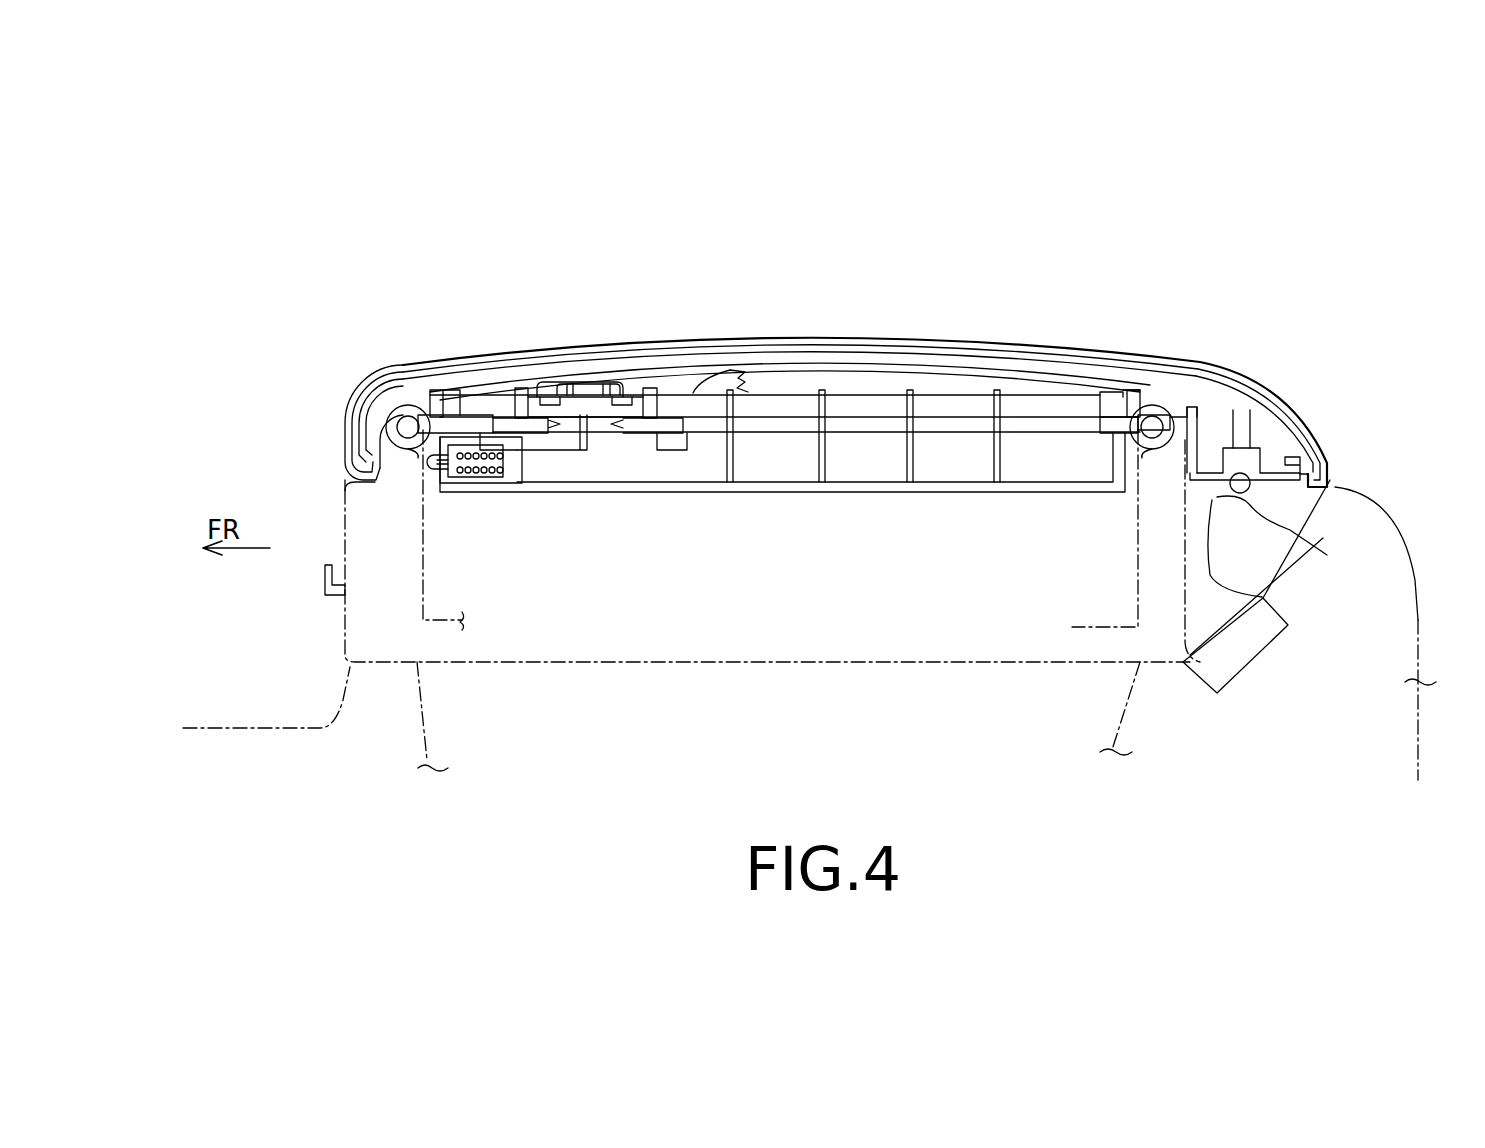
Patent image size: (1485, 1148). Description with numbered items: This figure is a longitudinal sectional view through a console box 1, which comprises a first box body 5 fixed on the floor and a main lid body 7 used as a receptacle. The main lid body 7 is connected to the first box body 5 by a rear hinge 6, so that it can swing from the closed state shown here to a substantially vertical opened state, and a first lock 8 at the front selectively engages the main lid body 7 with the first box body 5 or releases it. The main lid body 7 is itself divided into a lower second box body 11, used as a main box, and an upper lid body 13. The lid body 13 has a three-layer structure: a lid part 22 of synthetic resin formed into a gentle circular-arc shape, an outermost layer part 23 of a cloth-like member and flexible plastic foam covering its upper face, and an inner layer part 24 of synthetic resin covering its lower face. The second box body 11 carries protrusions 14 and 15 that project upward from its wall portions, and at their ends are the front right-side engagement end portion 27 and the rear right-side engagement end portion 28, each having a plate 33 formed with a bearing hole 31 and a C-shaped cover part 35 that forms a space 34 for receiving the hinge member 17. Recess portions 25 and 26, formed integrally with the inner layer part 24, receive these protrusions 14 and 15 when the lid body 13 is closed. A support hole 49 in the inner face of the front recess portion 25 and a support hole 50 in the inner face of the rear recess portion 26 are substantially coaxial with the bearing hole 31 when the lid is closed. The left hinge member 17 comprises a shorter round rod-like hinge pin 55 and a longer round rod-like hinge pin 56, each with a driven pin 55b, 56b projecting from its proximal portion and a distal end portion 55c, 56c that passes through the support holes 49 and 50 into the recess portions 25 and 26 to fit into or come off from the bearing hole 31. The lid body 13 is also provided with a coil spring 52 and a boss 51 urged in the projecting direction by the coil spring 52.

The console box 1 is at (1378, 488).
The first box body 5 is at (1425, 683).
The rear hinge 6 is at (1283, 615).
The main lid body 7 is at (270, 282).
The first lock 8 is at (320, 587).
The second box body 11 is at (337, 480).
The lid body 13 is at (355, 376).
The protrusion 14 is at (395, 395).
The protrusion 15 is at (1240, 405).
The left hinge member 17 is at (853, 408).
The lid part 22 is at (1268, 395).
The outermost layer part 23 is at (1262, 388).
The inner layer part 24 is at (1300, 433).
The recess portion 25 is at (365, 386).
The recess portion 26 is at (1327, 555).
The right-side engagement end portion 27 is at (530, 205).
The right-side engagement end portion 28 is at (1220, 205).
The bearing hole 31 is at (417, 457).
The plate 33 is at (418, 400).
The space 34 is at (1190, 370).
The cover part 35 is at (410, 400).
The support hole 49 is at (455, 412).
The support hole 50 is at (1123, 450).
The boss 51 is at (428, 474).
The coil spring 52 is at (492, 478).
The hinge pin 55 is at (490, 385).
The driven pin 55b is at (560, 380).
The distal end portion 55c is at (442, 400).
The hinge pin 56 is at (940, 427).
The driven pin 56b is at (660, 360).
The distal end portion 56c is at (1140, 400).